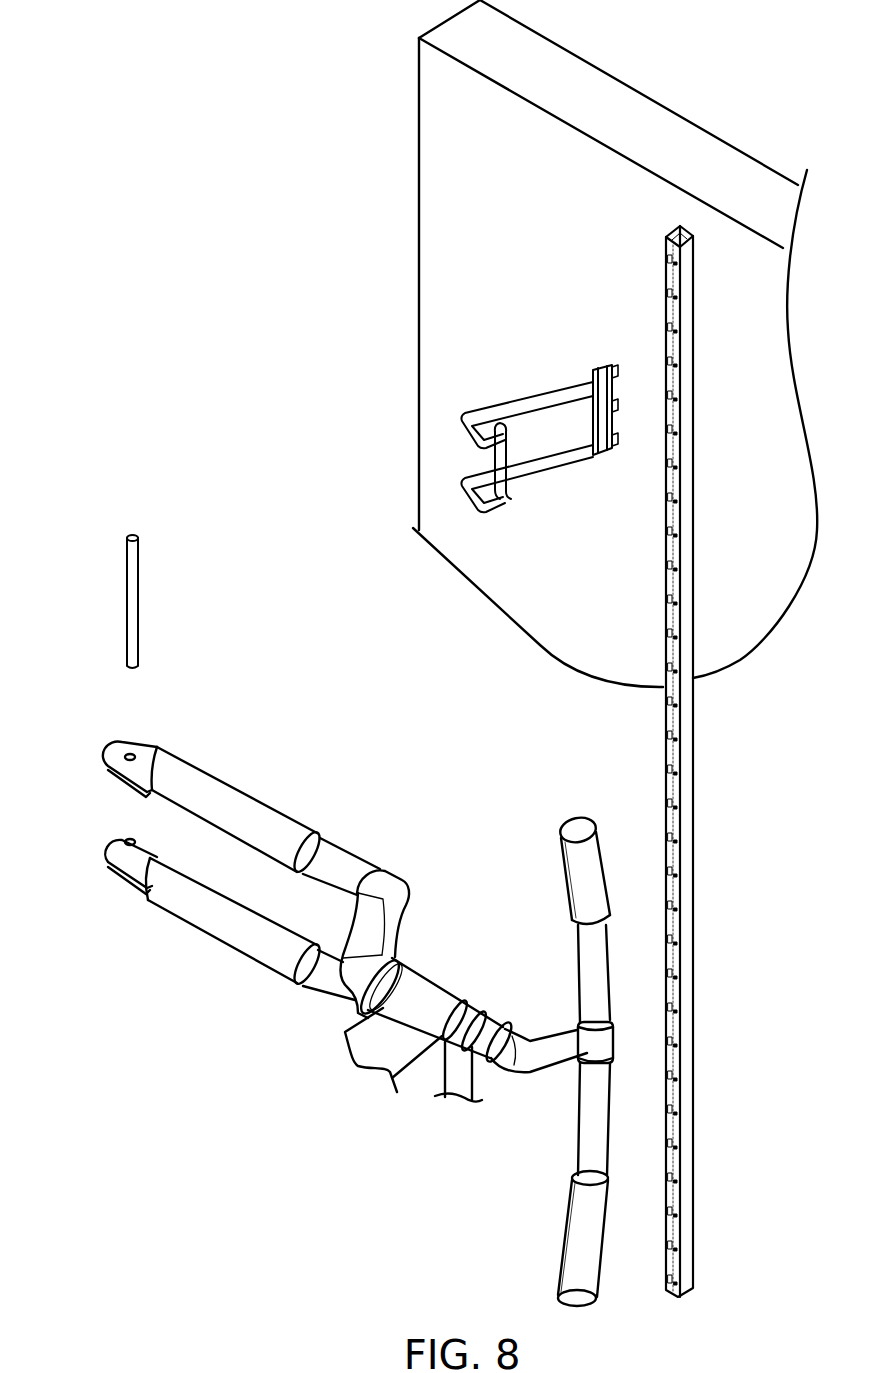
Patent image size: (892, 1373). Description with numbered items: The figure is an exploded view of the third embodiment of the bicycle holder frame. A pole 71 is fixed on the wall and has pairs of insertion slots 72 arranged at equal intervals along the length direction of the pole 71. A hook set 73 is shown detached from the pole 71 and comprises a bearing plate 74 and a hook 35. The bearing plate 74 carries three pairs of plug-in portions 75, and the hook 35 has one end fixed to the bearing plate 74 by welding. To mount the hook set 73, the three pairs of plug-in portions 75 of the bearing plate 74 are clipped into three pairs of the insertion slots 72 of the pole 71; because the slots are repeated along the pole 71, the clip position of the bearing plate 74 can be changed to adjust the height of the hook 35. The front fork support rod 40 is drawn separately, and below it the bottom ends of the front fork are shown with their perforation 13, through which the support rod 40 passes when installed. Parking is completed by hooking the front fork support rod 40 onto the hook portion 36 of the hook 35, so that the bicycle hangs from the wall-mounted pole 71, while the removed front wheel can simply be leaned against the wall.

The pole 71 is at (662, 210).
The insertion slots 72 is at (663, 292).
The hook set 73 is at (260, 228).
The bearing plate 74 is at (602, 364).
The plug-in portions 75 is at (618, 458).
The hook 35 is at (500, 382).
The hook portion 36 is at (498, 512).
The front fork support rod 40 is at (128, 556).
The perforation 13 is at (130, 842).